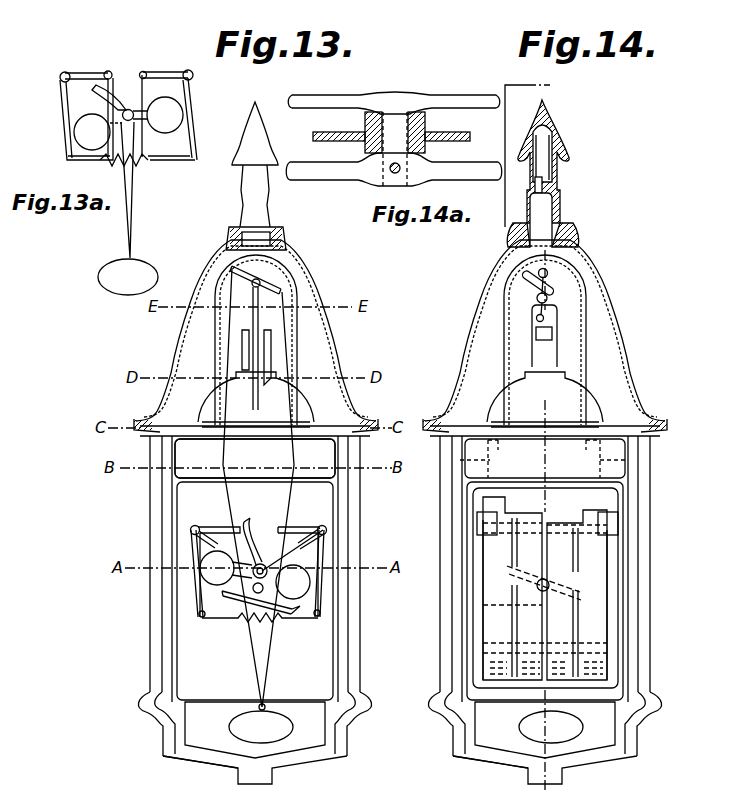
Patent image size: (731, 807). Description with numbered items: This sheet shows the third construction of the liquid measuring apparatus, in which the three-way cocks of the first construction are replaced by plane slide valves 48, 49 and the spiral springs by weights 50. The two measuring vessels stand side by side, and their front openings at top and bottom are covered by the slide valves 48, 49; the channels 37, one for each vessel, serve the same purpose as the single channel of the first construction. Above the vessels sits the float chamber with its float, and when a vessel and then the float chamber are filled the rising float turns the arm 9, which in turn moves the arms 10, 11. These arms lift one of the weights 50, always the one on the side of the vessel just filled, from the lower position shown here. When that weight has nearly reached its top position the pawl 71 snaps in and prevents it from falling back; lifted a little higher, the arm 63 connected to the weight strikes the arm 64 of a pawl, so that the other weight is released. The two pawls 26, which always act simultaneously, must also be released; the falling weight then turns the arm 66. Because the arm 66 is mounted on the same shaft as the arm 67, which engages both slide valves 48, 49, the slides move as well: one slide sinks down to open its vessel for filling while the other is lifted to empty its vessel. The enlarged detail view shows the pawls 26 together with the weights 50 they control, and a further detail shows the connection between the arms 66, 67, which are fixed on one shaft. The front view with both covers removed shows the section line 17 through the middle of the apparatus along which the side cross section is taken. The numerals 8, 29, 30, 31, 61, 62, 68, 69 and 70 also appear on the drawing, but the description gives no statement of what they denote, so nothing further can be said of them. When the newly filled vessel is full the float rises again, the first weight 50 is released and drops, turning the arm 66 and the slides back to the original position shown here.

In FIG. 14, the cylinder 8 is at (551, 345).
In FIG. 14, the arm 9 is at (549, 299).
In FIG. 14, the arm 10 is at (553, 282).
In FIG. 13, the arm 11 is at (268, 288).
In FIG. 14, the section line 17 is at (541, 444).
In FIG. 13A, the pawls 26 is at (70, 148).
In FIG. 13, the pawls 26 is at (197, 526).
In FIG. 13A, the cord 29 is at (132, 226).
In FIG. 13, the cord 29 is at (262, 664).
In FIG. 13A, the weight 30 is at (110, 288).
In FIG. 13, the weight 30 is at (261, 727).
In FIG. 14, the weight 30 is at (551, 727).
In FIG. 13, the base 31 is at (213, 732).
In FIG. 14, the base 31 is at (497, 724).
In FIG. 14, the channels 37 is at (542, 459).
In FIG. 14, the slide valve 48 is at (490, 614).
In FIG. 14, the slide valve 49 is at (607, 607).
In FIG. 13A, the weight 50 is at (80, 128).
In FIG. 13, the weight 50 is at (217, 568).
In FIG. 14, the casing 61 is at (577, 514).
In FIG. 13, the upper panel 62 is at (296, 470).
In FIG. 13, the arm 63 is at (252, 528).
In FIG. 13, the arm of the pawl 64 is at (206, 541).
In FIG. 13, the arm 66 is at (234, 598).
In FIG. 14A, the arm 66 is at (469, 168).
In FIG. 14A, the arm 67 is at (458, 93).
In FIG. 14, the arm 67 is at (512, 572).
In FIG. 13, the link 68 is at (222, 500).
In FIG. 13, the link 69 is at (298, 540).
In FIG. 13, the side plate 70 is at (190, 560).
In FIG. 13, the pawl 71 is at (198, 577).